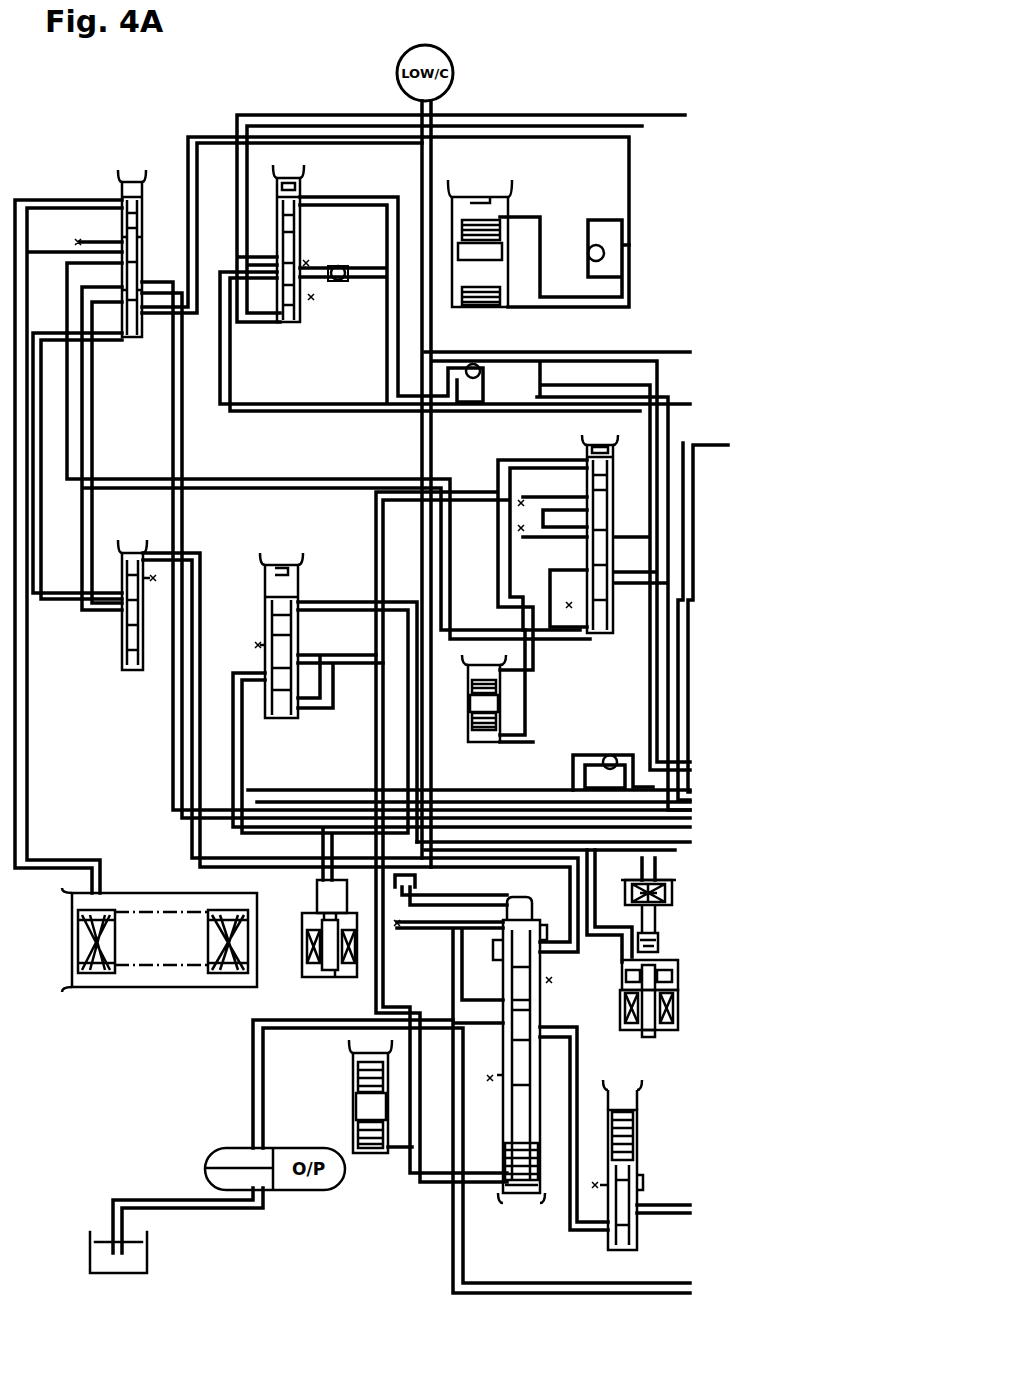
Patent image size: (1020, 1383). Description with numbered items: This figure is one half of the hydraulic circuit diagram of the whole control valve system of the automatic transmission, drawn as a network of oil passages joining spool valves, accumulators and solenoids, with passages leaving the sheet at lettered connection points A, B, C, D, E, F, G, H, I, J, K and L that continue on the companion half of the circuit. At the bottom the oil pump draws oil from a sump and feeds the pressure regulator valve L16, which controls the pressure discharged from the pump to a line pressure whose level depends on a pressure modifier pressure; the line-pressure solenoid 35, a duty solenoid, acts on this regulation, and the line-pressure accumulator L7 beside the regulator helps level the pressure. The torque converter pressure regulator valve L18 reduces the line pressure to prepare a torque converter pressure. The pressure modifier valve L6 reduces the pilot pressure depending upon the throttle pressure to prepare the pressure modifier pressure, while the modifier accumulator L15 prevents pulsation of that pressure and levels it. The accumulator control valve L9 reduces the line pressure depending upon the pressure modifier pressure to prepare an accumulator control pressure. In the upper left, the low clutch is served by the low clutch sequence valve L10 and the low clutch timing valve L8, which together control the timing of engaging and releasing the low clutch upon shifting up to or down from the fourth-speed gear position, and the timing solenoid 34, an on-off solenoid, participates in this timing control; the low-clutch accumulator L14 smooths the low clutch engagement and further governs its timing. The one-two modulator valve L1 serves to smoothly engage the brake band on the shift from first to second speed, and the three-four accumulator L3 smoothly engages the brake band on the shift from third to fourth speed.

The timing solenoid 34 is at (312, 982).
The line-pressure solenoid 35 is at (665, 1030).
The port A is at (640, 115).
The port B is at (640, 137).
The port C is at (690, 352).
The port D is at (660, 372).
The port E is at (690, 405).
The port F is at (712, 618).
The port G is at (650, 770).
The port H is at (690, 792).
The port I is at (690, 808).
The port J is at (690, 826).
The port K is at (690, 1208).
The port L is at (690, 1287).
The 1-2 modulator valve L1 is at (288, 257).
The 3-4 accumulator L3 is at (480, 255).
The pressure modifier valve L6 is at (281, 647).
The line-pressure accumulator L7 is at (370, 1110).
The low clutch timing valve L8 is at (134, 612).
The accumulator control valve L9 is at (600, 547).
The low clutch sequence valve L10 is at (133, 265).
The low-clutch accumulator L14 is at (159, 949).
The modifier accumulator L15 is at (484, 708).
The pressure regulator valve L16 is at (520, 1061).
The torque converter pressure regulator valve L18 is at (622, 1176).